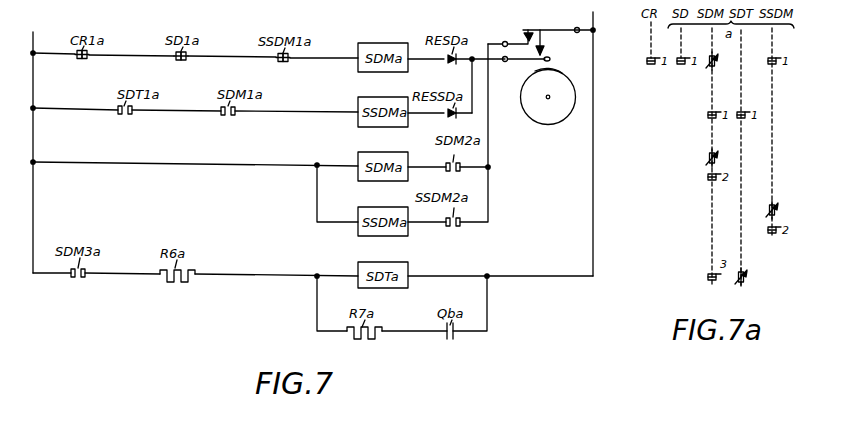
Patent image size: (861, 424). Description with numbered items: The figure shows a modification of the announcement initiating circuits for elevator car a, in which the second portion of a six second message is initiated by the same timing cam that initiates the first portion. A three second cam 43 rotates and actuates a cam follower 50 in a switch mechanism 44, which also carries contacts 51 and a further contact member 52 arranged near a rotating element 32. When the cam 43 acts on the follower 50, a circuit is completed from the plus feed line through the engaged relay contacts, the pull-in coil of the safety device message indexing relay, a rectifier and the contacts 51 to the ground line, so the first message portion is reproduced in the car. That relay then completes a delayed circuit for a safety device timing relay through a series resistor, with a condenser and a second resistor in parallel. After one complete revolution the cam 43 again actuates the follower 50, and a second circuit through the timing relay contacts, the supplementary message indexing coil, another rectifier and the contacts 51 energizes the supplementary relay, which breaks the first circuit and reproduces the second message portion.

The rotatable drum 32 is at (552, 124).
The three second cam 43 is at (575, 70).
The switch mechanism 44 is at (555, 23).
The cam follower 50 is at (545, 62).
The contacts 51 is at (545, 52).
The contact 52 is at (525, 35).